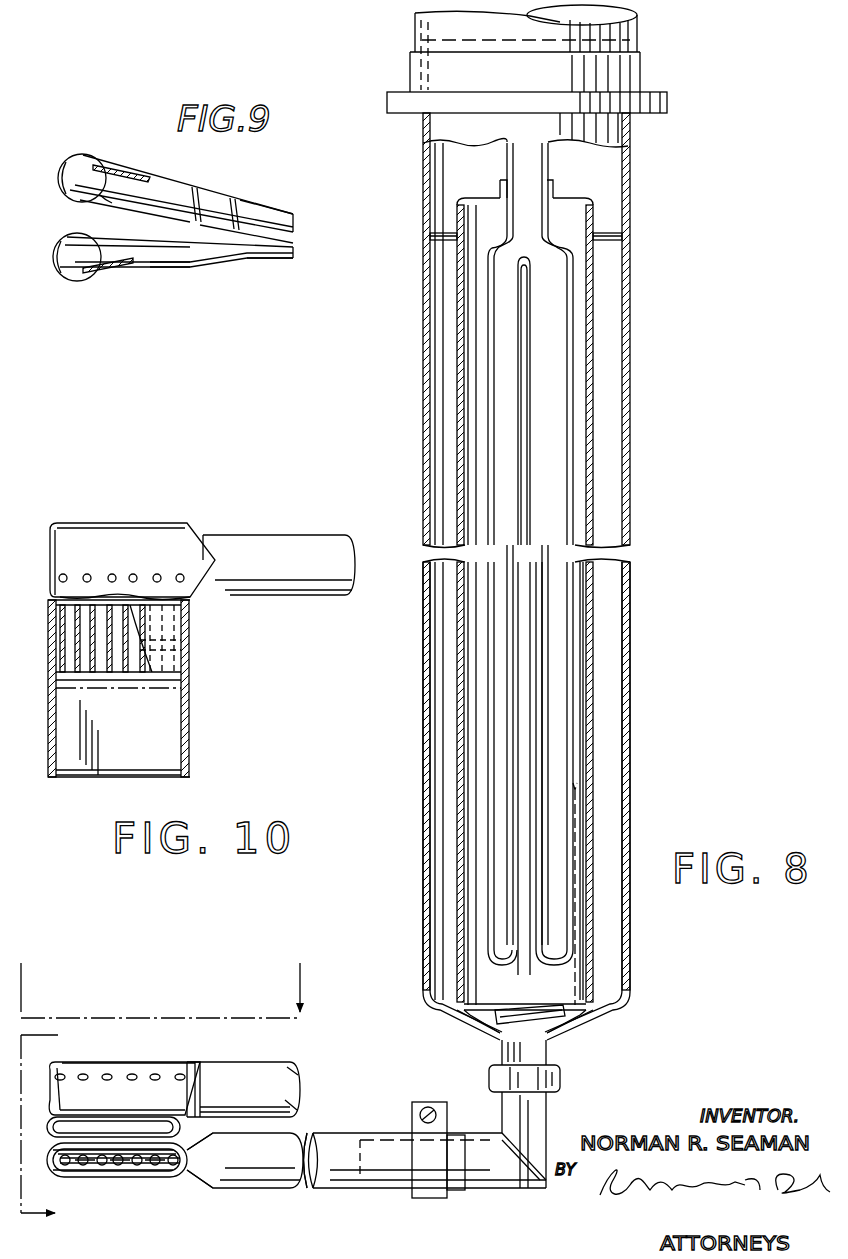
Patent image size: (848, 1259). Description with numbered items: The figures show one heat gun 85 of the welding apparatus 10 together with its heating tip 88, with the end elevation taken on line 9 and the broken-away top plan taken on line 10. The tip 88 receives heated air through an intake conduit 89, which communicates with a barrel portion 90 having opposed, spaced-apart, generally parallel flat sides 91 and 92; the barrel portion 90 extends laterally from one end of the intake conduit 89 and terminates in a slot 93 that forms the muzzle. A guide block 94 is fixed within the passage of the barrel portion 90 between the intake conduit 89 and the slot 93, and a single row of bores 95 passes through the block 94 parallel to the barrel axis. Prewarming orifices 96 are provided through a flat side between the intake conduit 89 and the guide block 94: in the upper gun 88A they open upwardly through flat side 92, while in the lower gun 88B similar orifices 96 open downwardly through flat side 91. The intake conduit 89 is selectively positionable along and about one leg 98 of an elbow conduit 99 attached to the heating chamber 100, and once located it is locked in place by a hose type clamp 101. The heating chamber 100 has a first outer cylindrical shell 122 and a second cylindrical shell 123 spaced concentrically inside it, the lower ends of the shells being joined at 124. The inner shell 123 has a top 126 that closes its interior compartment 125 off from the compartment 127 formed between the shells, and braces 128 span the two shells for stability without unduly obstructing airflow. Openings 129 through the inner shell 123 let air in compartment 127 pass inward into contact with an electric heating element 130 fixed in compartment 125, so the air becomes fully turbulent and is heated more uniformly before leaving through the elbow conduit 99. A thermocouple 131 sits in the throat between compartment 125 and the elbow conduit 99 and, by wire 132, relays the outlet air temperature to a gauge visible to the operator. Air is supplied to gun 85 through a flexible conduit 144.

In FIG. 8, the heat gun 85 is at (638, 426).
In FIG. 9, the heating tip 88 is at (150, 277).
In FIG. 10, the heating tip 88 is at (193, 523).
In FIG. 8, the upper gun 88A is at (200, 1060).
In FIG. 9, the upper gun 88A is at (258, 203).
In FIG. 8, the lower gun 88B is at (207, 1188).
In FIG. 9, the lower gun 88B is at (173, 277).
In FIG. 8, the intake conduit 89 is at (277, 1062).
In FIG. 9, the intake conduit 89 is at (102, 198).
In FIG. 10, the intake conduit 89 is at (302, 593).
In FIG. 8, the barrel portion 90 is at (42, 1153).
In FIG. 9, the barrel portion 90 is at (296, 212).
In FIG. 10, the barrel portion 90 is at (192, 702).
In FIG. 8, the flat side 91 is at (82, 1175).
In FIG. 9, the flat side 91 is at (185, 276).
In FIG. 10, the flat side 91 is at (134, 750).
In FIG. 8, the flat side 92 is at (143, 1068).
In FIG. 9, the flat side 92 is at (190, 237).
In FIG. 10, the flat side 92 is at (83, 540).
In FIG. 8, the slot 93 is at (132, 1170).
In FIG. 9, the slot 93 is at (297, 226).
In FIG. 10, the slot 93 is at (157, 778).
In FIG. 8, the guide block 94 is at (147, 1168).
In FIG. 10, the guide block 94 is at (175, 643).
In FIG. 8, the bores 95 is at (173, 1155).
In FIG. 10, the bores 95 is at (137, 673).
In FIG. 8, the prewarming orifices 96 is at (107, 1074).
In FIG. 9, the prewarming orifices 96 is at (120, 168).
In FIG. 10, the prewarming orifices 96 is at (157, 573).
In FIG. 8, the leg 98 is at (357, 1180).
In FIG. 8, the elbow conduit 99 is at (515, 1185).
In FIG. 8, the heating chamber 100 is at (635, 790).
In FIG. 8, the hose type clamp 101 is at (412, 1110).
In FIG. 8, the first outer cylindrical shell 122 is at (630, 512).
In FIG. 8, the second cylindrical shell 123 is at (595, 604).
In FIG. 8, the joint of shells 124 is at (583, 1028).
In FIG. 8, the compartment 125 is at (550, 772).
In FIG. 8, the top 126 is at (548, 200).
In FIG. 8, the compartment 127 is at (616, 300).
In FIG. 8, the braces 128 is at (612, 240).
In FIG. 8, the openings 129 is at (597, 640).
In FIG. 8, the electric heating element 130 is at (570, 488).
In FIG. 8, the thermocouple 131 is at (535, 1008).
In FIG. 8, the wire 132 is at (583, 974).
In FIG. 8, the flexible conduit 144 is at (630, 30).
In FIG. 8, the section line 9- 9 is at (49, 1124).
In FIG. 8, the section line 10- 10 is at (176, 989).